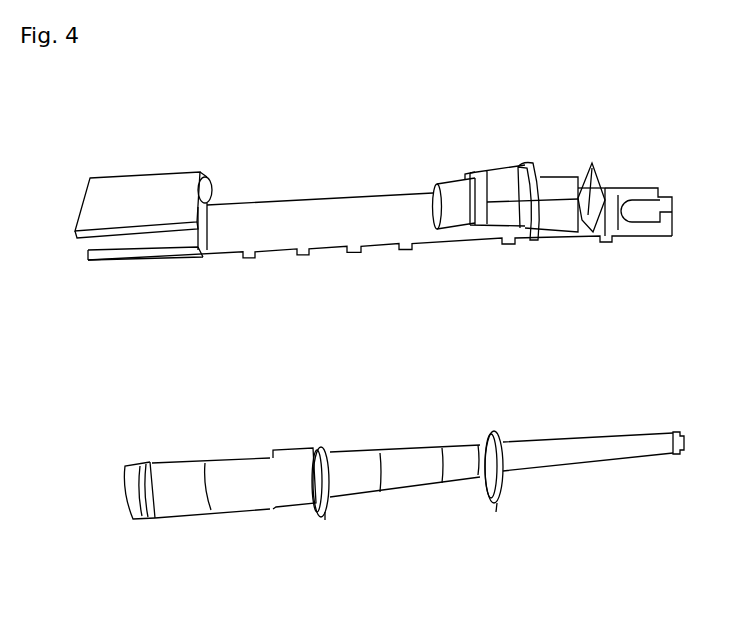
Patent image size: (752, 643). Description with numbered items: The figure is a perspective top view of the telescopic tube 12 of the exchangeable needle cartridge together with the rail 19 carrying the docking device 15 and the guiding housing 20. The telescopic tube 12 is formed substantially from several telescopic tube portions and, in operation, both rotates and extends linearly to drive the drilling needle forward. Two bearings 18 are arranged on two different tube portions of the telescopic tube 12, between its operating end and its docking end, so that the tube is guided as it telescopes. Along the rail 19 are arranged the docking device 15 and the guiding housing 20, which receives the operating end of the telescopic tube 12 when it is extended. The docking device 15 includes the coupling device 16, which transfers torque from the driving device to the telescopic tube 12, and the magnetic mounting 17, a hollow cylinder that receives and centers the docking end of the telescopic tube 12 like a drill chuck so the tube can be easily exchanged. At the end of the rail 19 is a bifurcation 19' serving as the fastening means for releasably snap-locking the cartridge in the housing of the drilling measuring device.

The guiding housing 20 is at (145, 192).
The rail 19 is at (380, 255).
The bifurcation 19' is at (632, 179).
The magnetic mounting 17 is at (447, 200).
The docking device 15 is at (507, 156).
The coupling device 16 is at (565, 233).
The telescopic tube 12 is at (406, 491).
The bearing 18 is at (325, 518).